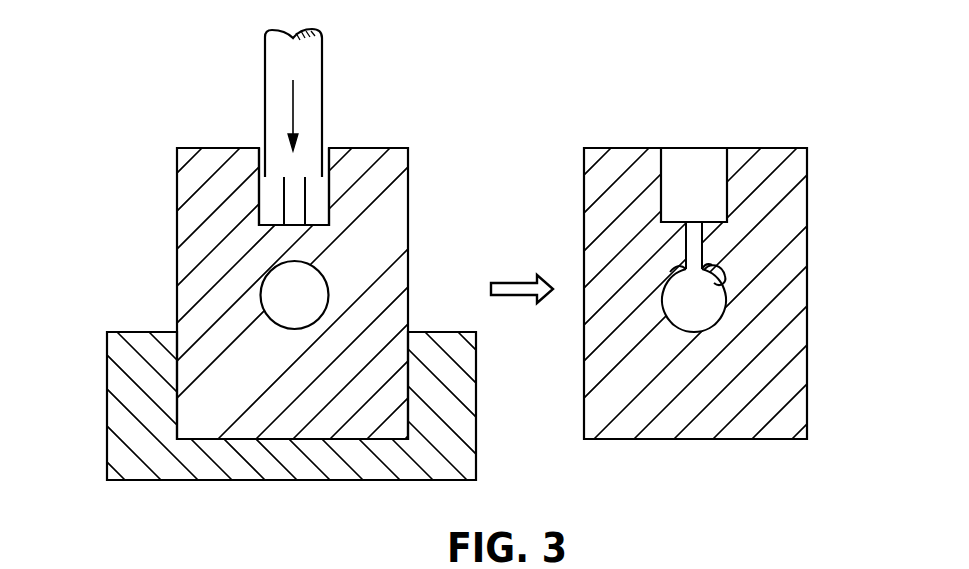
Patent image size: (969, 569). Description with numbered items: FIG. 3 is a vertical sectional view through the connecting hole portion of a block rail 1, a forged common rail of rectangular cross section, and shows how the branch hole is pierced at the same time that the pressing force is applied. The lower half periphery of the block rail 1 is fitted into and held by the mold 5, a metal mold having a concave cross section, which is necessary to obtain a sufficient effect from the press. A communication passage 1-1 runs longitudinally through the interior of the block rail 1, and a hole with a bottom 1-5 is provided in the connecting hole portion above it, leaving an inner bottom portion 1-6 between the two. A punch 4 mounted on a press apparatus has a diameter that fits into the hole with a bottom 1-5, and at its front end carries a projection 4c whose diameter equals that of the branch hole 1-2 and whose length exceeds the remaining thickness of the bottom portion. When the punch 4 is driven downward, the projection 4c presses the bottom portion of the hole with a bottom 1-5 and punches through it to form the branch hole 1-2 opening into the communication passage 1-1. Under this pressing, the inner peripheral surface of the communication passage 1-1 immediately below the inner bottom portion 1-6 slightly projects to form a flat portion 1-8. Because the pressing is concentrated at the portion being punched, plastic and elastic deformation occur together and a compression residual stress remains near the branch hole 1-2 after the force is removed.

The block rail 1 is at (190, 262).
The communication passage 1-1 is at (312, 278).
The branch hole 1-2 is at (691, 271).
The hole with a bottom 1-5 is at (327, 203).
The inner bottom portion 1-6 is at (322, 222).
The flat portion 1-8 is at (728, 285).
The punch 4 is at (310, 58).
The projection 4c is at (287, 198).
The mold 5 is at (112, 363).